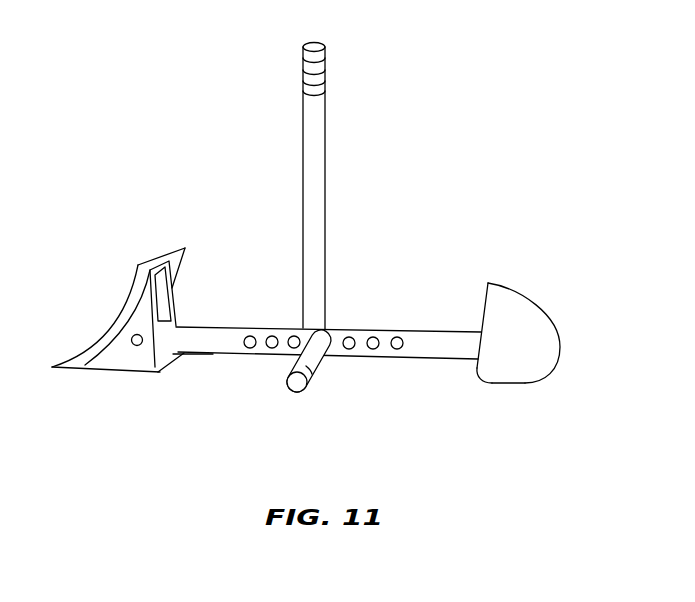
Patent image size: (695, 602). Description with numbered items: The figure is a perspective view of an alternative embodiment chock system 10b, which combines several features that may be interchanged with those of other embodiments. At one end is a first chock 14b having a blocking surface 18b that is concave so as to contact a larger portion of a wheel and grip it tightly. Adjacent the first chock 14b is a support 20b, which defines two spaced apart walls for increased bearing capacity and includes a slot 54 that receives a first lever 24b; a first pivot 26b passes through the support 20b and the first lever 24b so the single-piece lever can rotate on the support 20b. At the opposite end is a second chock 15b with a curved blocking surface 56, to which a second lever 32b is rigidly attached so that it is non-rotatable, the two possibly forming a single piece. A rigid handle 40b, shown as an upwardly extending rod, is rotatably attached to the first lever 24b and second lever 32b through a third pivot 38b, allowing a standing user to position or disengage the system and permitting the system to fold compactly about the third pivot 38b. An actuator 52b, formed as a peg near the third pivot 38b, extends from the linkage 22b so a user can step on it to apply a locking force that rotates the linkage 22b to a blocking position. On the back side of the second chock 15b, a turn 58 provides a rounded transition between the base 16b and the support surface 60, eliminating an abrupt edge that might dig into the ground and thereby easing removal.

The alternative embodiment chock system 10b is at (437, 93).
The handle 40b is at (302, 176).
The blocking surface 18b is at (118, 319).
The first chock 14b is at (92, 371).
The first pivot 26b is at (134, 347).
The support 20b is at (147, 357).
The slot 54 is at (165, 313).
The linkage 22b is at (349, 296).
The second lever 32b is at (388, 330).
The first lever 24b is at (225, 357).
The third pivot 38b is at (328, 350).
The actuator 52b is at (310, 372).
The second chock 15b is at (556, 369).
The curved blocking surface 56 is at (535, 301).
The base 16b is at (523, 386).
The turn 58 is at (479, 373).
The support surface 60 is at (486, 300).